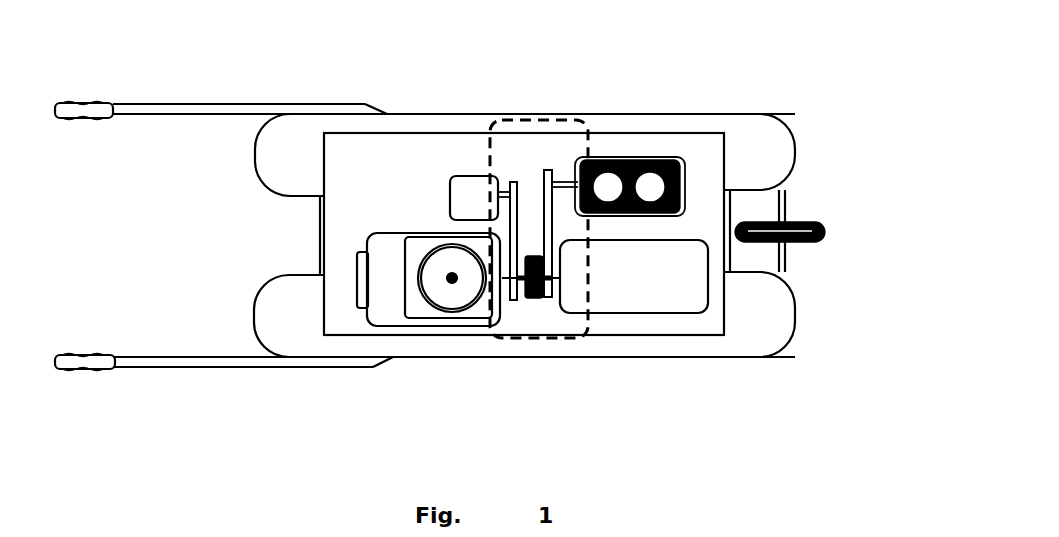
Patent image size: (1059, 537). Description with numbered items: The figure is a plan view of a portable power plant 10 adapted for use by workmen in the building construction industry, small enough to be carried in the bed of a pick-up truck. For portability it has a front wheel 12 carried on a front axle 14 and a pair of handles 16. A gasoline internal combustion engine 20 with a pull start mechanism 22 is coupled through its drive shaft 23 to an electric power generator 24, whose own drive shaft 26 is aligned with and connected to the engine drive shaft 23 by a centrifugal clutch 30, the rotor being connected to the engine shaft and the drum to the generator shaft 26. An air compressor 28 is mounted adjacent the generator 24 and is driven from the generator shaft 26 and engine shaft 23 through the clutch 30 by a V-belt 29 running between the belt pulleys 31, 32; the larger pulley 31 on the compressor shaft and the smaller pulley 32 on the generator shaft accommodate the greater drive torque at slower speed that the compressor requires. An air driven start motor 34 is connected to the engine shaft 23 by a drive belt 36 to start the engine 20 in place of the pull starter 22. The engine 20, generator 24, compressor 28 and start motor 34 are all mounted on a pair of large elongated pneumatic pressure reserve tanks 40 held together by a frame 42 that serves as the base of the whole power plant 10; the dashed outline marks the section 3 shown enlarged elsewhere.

The power plant 10 is at (457, 107).
The section line 3- 3 is at (585, 118).
The front wheel 12 is at (826, 229).
The front axle 14 is at (788, 260).
The handles 16 is at (210, 105).
The gasoline internal combustion engine 20 is at (388, 255).
The pull start mechanism 22 is at (358, 274).
The drive shaft 23 is at (503, 292).
The electric power generator 24 is at (700, 282).
The generator drive shaft 26 is at (548, 292).
The air compressor 28 is at (650, 183).
The V-belt 29 is at (542, 228).
The centrifugal clutch 30 is at (540, 253).
The V-belt pulley 31 is at (547, 172).
The V-belt pulley 32 is at (557, 268).
The air driven start motor 34 is at (480, 187).
The drive belt 36 is at (509, 228).
The pneumatic pressure reserve tanks 40 is at (755, 133).
The frame 42 is at (730, 208).